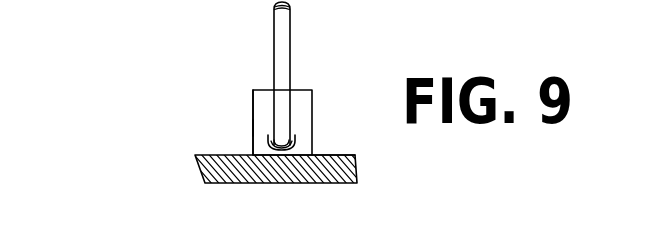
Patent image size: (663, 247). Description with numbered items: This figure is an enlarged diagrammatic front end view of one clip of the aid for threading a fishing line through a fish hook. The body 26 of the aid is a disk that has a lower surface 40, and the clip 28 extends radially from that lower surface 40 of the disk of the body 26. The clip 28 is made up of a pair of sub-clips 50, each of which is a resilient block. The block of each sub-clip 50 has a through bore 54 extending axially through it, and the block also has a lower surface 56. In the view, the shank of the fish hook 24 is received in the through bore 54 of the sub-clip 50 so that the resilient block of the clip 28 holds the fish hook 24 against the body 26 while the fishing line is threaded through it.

The fish hook 24 is at (300, 26).
The body 26 is at (228, 195).
The clip 28 is at (237, 128).
The lower surface 40 is at (322, 155).
The sub-clip 50 is at (237, 97).
The through bore 54 is at (293, 153).
The lower surface 56 is at (258, 90).